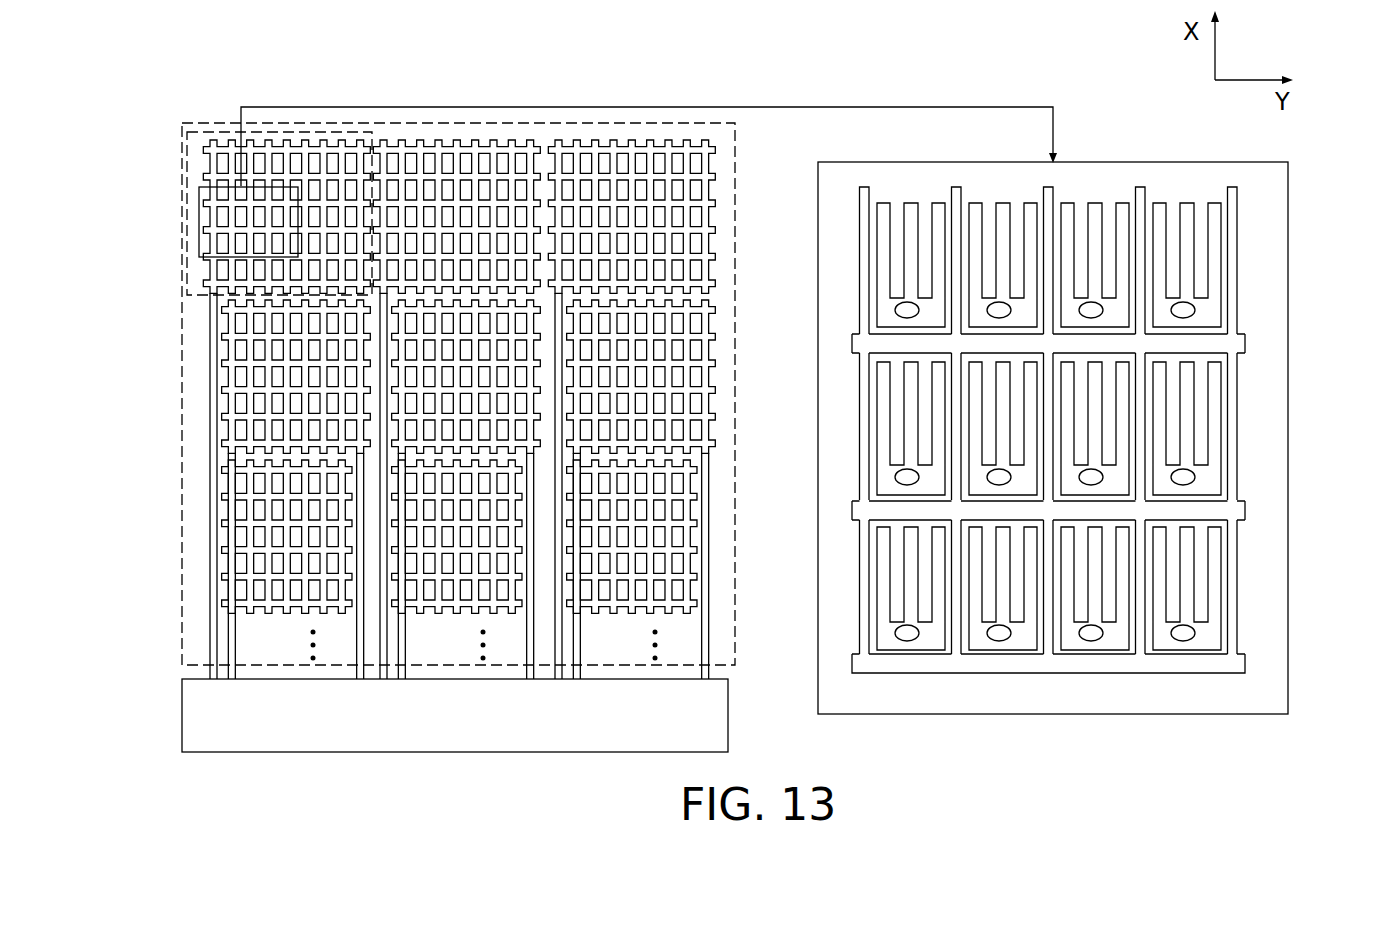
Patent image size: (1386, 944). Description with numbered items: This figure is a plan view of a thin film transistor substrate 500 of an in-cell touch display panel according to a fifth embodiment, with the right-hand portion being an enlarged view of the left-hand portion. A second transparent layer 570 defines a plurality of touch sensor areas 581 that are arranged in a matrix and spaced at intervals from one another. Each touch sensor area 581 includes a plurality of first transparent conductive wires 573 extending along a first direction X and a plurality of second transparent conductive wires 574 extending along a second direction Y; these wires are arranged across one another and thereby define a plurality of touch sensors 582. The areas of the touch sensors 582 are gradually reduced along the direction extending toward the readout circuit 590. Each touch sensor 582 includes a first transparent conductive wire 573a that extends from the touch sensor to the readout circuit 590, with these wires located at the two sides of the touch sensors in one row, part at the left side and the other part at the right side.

The thin film transistor substrate 500 is at (621, 66).
The second transparent layer 570 is at (182, 324).
The first transparent conductive wires 573 is at (213, 162).
The first transparent conductive wire 573a is at (214, 383).
The second transparent conductive wires 574 is at (221, 142).
The touch sensor areas 581 is at (188, 214).
The touch sensors 582 is at (432, 122).
The readout circuit 590 is at (196, 680).